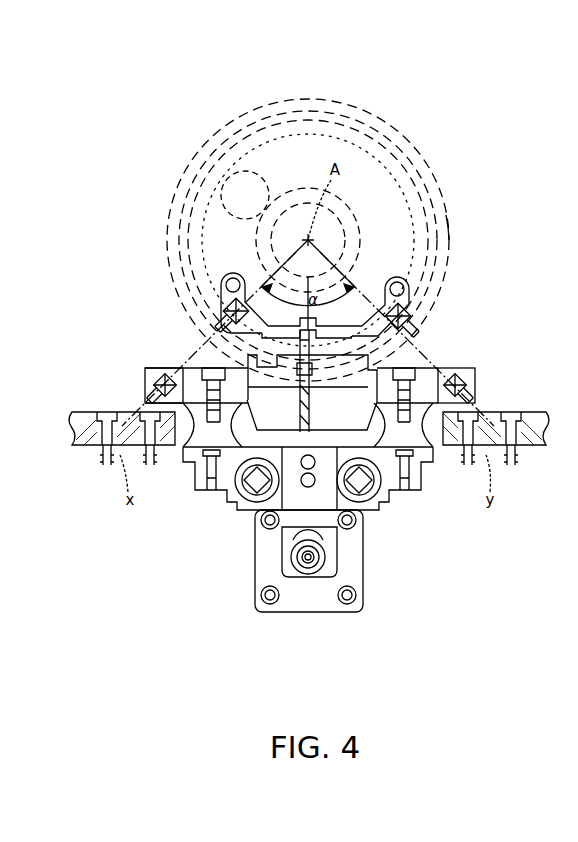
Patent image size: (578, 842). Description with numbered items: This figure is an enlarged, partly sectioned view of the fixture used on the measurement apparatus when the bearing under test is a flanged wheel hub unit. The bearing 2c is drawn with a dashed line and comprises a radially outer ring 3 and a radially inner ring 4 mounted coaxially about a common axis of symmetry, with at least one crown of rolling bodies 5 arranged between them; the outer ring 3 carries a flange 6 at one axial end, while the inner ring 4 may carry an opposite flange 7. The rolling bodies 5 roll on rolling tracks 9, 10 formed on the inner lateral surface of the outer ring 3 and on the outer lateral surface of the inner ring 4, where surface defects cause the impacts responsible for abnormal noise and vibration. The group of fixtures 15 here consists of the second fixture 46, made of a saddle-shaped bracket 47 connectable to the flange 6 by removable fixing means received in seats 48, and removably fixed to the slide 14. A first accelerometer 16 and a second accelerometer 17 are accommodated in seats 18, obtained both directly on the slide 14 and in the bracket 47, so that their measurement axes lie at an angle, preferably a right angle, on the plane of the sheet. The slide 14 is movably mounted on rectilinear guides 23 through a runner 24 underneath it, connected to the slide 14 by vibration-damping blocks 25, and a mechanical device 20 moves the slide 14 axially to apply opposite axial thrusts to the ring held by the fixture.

The bearing 2c is at (404, 110).
The radially outer ring 3 is at (293, 98).
The radially inner ring 4 is at (355, 232).
The rolling bodies 5 is at (221, 197).
The flange 6 is at (447, 236).
The flange 7 is at (228, 140).
The rolling track 9 is at (334, 112).
The rolling track 10 is at (343, 198).
The slide 14 is at (432, 369).
The group of fixtures 15 is at (178, 322).
The first accelerometer 16 is at (143, 384).
The second accelerometer 17 is at (480, 388).
The seats 18 is at (225, 293).
The mechanical device 20 is at (370, 558).
The rectilinear guides 23 is at (248, 492).
The runner 24 is at (298, 482).
The blocks 25 is at (203, 433).
The second fixture 46 is at (425, 288).
The saddle-shaped bracket 47 is at (310, 321).
The seats 48 is at (233, 273).